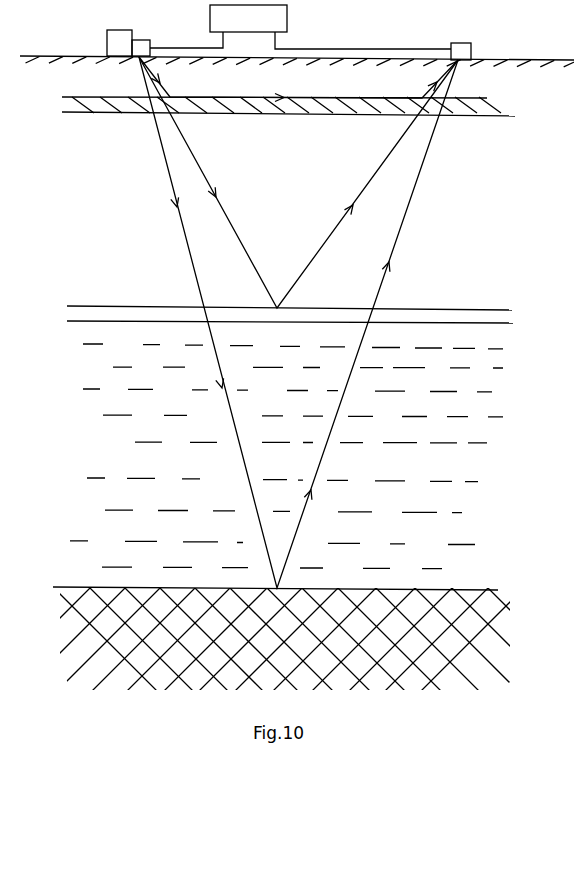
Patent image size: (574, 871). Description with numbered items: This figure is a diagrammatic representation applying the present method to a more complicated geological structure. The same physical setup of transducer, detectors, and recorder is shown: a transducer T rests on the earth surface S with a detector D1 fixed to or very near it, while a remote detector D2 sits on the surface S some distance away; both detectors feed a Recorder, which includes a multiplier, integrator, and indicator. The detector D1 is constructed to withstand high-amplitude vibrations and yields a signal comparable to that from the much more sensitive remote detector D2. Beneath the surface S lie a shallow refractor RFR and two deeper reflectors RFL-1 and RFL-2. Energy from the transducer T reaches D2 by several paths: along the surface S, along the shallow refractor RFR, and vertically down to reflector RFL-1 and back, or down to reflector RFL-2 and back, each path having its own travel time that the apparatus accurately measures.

The surface S is at (297, 55).
The recorder Recorder is at (300, 27).
The transducer T is at (119, 43).
The detector D1 is at (141, 48).
The remote detector D2 is at (461, 52).
The shallow refractor RFR is at (289, 103).
The reflector RFL1 RFL-1 is at (291, 307).
The reflector RFL2 RFL-2 is at (287, 633).